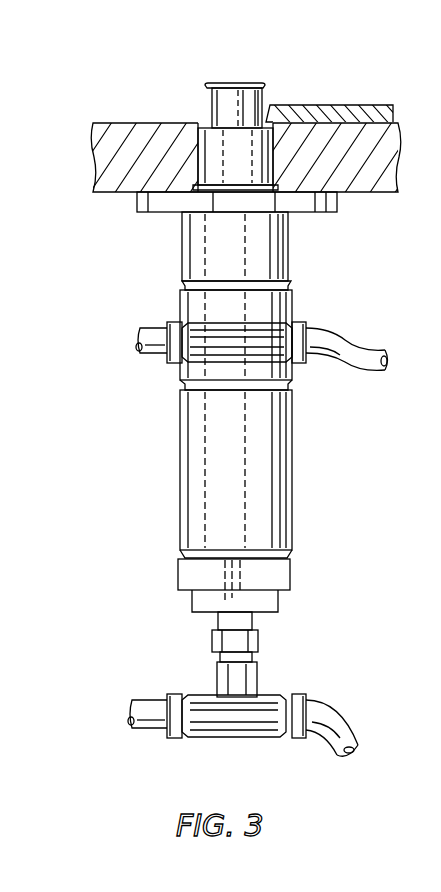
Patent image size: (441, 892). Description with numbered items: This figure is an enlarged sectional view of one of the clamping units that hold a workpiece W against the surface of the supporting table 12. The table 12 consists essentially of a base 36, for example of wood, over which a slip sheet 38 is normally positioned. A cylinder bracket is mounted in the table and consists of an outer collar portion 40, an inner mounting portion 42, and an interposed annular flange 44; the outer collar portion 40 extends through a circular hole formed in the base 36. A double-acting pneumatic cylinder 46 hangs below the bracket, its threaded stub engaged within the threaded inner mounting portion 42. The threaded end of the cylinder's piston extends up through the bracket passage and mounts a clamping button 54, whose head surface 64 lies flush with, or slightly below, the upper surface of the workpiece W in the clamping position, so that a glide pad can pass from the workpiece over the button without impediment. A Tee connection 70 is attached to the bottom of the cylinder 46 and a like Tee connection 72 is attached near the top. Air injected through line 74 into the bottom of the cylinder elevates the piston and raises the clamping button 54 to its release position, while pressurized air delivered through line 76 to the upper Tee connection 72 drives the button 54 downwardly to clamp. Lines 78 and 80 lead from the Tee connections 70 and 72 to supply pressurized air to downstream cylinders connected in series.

The supporting table 12 is at (163, 122).
The base 36 is at (138, 175).
The slip sheet 38 is at (393, 120).
The workpiece W is at (365, 106).
The outer collar portion 40 is at (255, 148).
The clamping button 54 is at (240, 83).
The surface of the head portion 64 is at (212, 78).
The annular flange 44 is at (175, 200).
The inner mounting portion 42 is at (280, 240).
The double-acting pneumatic cylinder 46 is at (180, 446).
The Tee connection 72 is at (232, 340).
The line 80 is at (158, 332).
The line 76 is at (350, 344).
The Tee connection 70 is at (236, 712).
The line 78 is at (151, 708).
The line 74 is at (337, 712).